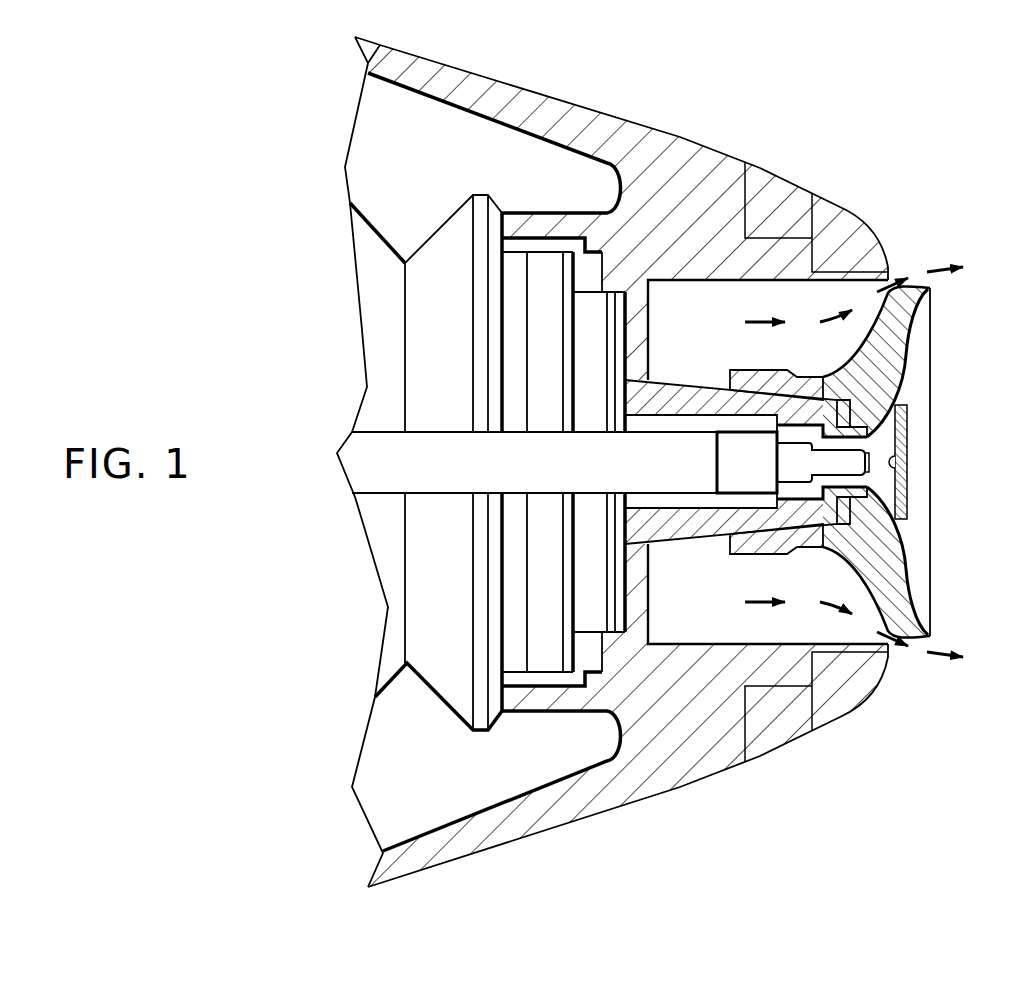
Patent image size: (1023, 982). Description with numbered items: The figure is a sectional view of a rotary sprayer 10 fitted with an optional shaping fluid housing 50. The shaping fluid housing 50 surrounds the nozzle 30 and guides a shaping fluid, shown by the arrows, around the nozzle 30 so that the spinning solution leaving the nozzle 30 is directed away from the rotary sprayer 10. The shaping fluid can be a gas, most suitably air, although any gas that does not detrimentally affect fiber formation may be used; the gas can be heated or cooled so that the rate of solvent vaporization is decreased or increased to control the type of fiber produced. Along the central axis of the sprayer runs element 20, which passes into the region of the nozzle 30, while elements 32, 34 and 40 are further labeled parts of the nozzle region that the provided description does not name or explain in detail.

The rotary sprayer 10 is at (862, 140).
The center shaft 20 is at (373, 463).
The nozzle 30 is at (893, 340).
The nozzle exit surface 32 is at (903, 543).
The nozzle lip 34 is at (932, 636).
The center plate 40 is at (908, 445).
The shaping fluid housing 50 is at (695, 785).